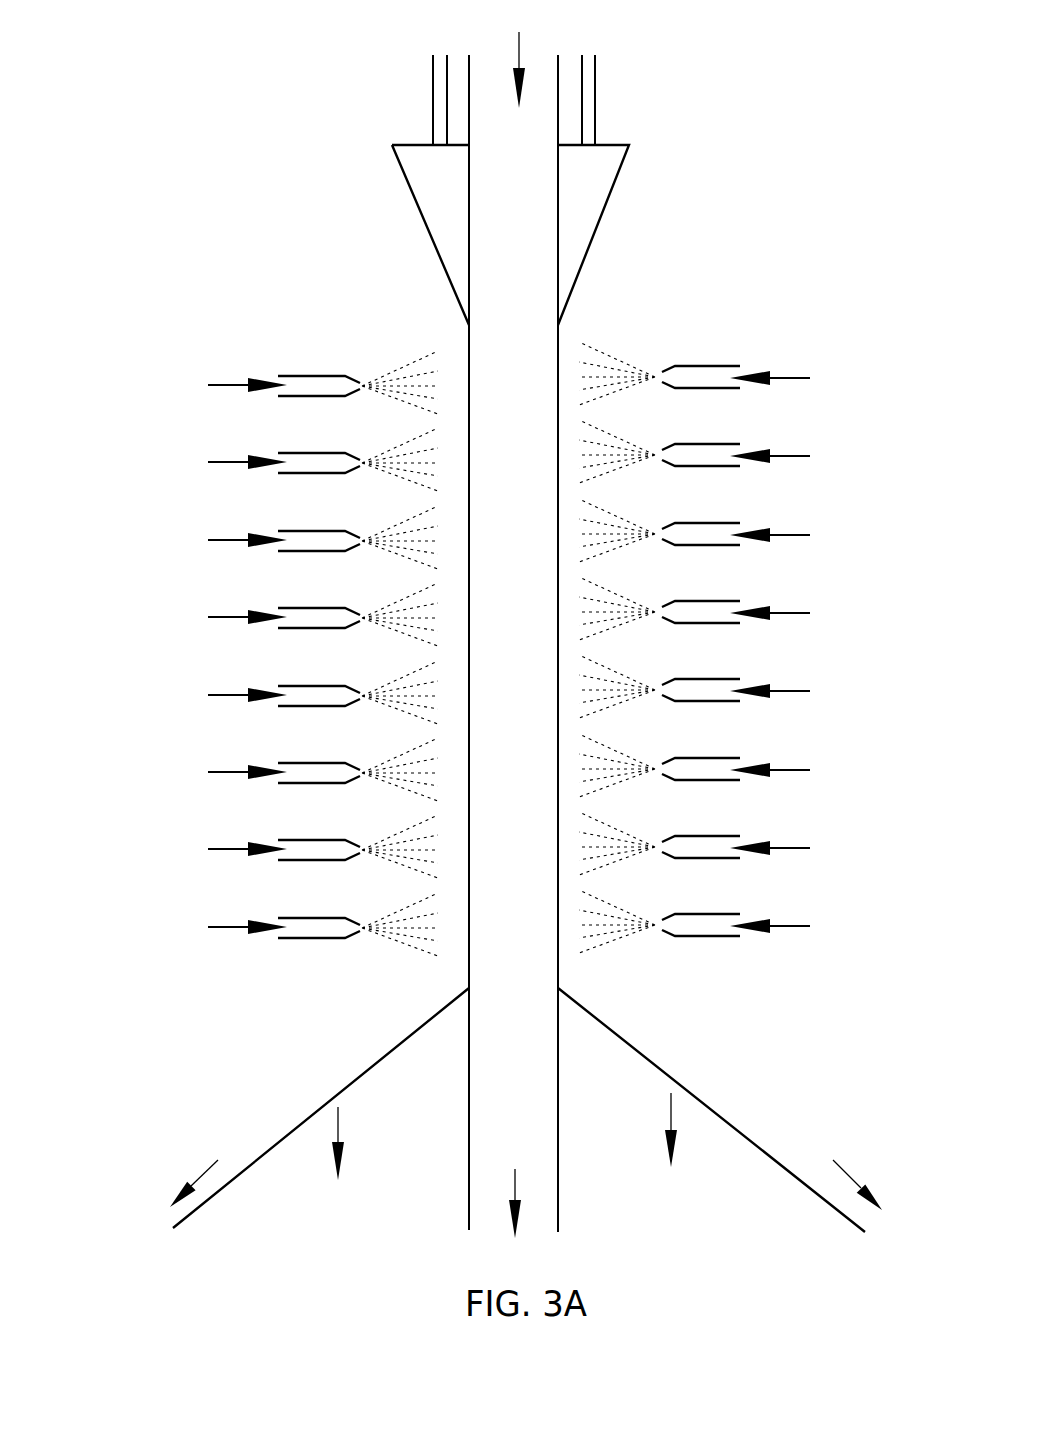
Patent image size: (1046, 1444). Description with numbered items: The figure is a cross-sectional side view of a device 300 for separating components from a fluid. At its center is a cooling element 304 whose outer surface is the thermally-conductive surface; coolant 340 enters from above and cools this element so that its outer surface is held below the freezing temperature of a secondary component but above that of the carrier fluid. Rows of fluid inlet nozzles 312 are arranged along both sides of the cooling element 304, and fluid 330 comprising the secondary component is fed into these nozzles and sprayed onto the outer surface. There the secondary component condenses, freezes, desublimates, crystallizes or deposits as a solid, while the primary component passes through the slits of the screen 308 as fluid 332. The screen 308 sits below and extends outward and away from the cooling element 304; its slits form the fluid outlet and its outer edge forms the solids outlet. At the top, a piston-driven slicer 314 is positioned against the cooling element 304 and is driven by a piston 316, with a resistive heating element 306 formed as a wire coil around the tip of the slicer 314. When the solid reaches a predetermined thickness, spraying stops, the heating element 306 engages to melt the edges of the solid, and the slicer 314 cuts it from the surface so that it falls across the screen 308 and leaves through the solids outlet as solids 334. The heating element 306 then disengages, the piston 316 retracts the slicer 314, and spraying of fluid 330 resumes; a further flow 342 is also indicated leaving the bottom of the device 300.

The device for use in separating components from a fluid 300 is at (158, 74).
The cooling element 304 is at (468, 347).
The resistive heating element 306 is at (563, 310).
The screen 308 is at (307, 1118).
The fluid inlet nozzles 312 is at (312, 375).
The piston-driven slicer 314 is at (588, 199).
The piston 316 is at (590, 98).
The fluid 330 is at (481, 652).
The fluid 332 is at (504, 1156).
The solids 334 is at (526, 1170).
The coolant 340 is at (519, 57).
The central outlet flow 342 is at (514, 1223).